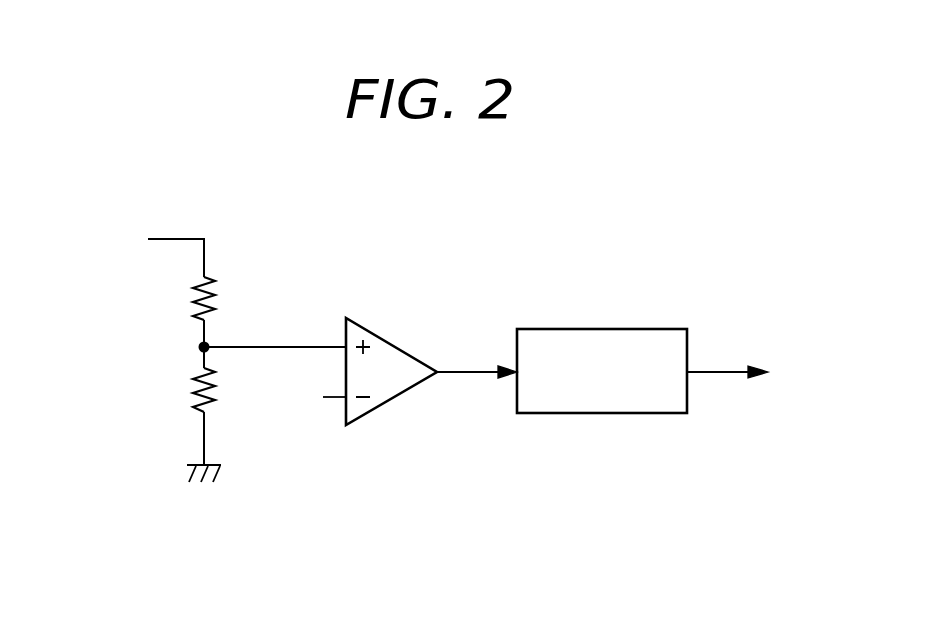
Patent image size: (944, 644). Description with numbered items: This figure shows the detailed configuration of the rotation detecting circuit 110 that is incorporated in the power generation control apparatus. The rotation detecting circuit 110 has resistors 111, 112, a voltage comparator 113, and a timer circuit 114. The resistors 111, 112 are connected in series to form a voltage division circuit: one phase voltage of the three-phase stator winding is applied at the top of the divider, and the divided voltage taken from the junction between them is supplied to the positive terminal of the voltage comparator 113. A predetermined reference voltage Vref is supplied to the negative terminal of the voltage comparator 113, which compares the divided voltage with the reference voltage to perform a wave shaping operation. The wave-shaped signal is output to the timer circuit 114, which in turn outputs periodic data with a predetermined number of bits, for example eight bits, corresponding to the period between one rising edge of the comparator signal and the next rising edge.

The rotation detecting circuit 110 is at (518, 239).
The resistor 111 is at (197, 305).
The resistor 112 is at (197, 398).
The voltage comparator 113 is at (388, 344).
The timer circuit 114 is at (625, 329).